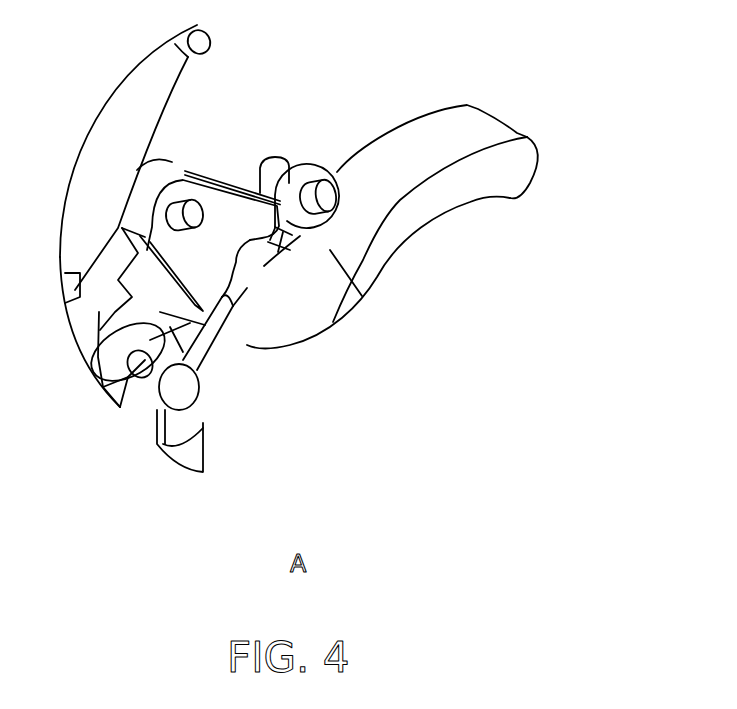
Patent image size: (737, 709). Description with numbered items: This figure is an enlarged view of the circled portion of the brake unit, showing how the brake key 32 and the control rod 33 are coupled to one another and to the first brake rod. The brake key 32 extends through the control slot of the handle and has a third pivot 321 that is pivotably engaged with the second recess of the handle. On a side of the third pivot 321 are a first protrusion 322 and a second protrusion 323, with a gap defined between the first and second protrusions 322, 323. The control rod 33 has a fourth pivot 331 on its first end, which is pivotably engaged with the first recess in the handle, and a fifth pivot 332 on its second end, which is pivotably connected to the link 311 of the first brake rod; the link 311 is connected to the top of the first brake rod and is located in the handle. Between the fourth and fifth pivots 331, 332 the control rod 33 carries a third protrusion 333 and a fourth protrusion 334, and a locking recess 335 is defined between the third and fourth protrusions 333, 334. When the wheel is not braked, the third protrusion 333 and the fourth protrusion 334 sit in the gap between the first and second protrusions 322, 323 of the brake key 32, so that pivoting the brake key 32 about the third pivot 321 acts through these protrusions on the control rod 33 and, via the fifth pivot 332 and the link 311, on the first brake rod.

The brake key 32 is at (497, 119).
The third pivot 321 is at (192, 203).
The fourth pivot 331 is at (332, 198).
The second protrusion 323 is at (285, 227).
The fourth protrusion 334 is at (268, 245).
The locking recess 335 is at (272, 262).
The third protrusion 333 is at (240, 278).
The first protrusion 322 is at (227, 302).
The control rod 33 is at (217, 347).
The fifth pivot 332 is at (200, 395).
The link 311 is at (215, 458).